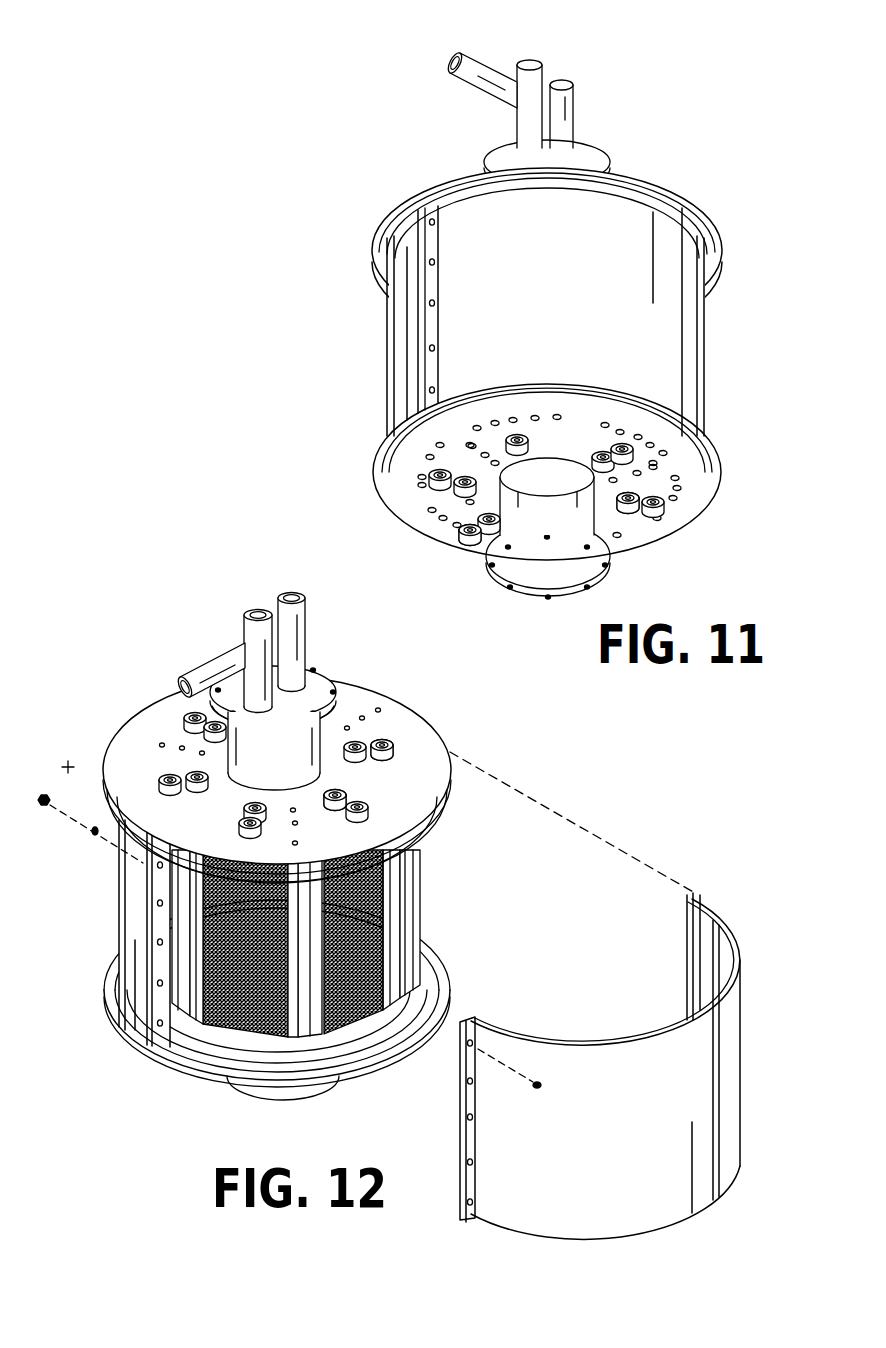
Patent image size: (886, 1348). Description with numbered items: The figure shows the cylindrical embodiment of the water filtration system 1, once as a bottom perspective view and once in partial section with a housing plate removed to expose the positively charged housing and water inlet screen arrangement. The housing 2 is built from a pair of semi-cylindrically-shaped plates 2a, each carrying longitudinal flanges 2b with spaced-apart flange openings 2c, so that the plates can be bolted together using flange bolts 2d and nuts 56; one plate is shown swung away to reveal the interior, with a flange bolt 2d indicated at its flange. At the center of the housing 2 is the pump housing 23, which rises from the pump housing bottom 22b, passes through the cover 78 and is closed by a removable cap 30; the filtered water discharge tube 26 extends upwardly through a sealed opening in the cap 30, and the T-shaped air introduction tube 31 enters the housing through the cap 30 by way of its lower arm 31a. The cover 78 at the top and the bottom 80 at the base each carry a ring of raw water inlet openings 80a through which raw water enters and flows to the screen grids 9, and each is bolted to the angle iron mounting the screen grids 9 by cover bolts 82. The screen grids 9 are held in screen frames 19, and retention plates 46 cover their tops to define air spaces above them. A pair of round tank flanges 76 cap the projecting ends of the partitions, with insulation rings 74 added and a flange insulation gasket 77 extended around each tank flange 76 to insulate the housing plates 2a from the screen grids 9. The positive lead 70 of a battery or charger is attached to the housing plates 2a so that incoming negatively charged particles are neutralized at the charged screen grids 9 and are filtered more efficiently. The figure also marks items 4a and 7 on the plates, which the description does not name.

In FIG. 11, the water filtration system 1 is at (535, 310).
In FIG. 12, the water filtration system 1 is at (399, 879).
In FIG. 12, the housing 2 is at (772, 1090).
In FIG. 11, the semi-cylindrically-shaped plates 2a is at (410, 328).
In FIG. 12, the semi-cylindrically-shaped plates 2a is at (135, 873).
In FIG. 11, the longitudinal flanges 2b is at (438, 302).
In FIG. 12, the longitudinal flanges 2b is at (160, 917).
In FIG. 12, the flange openings 2c is at (155, 982).
In FIG. 11, the flange bolts 2d is at (432, 328).
In FIG. 12, the flange bolts 2d is at (543, 1085).
In FIG. 11, the nozzle outlet 4a is at (467, 537).
In FIG. 12, the nozzle outlet 4a is at (388, 732).
In FIG. 11, the nozzles 7 is at (624, 445).
In FIG. 12, the nozzles 7 is at (190, 726).
In FIG. 12, the screen grids 9 is at (383, 878).
In FIG. 12, the screen frame 19 is at (316, 898).
In FIG. 11, the pump housing bottom 22b is at (568, 577).
In FIG. 12, the pump housing bottom 22b is at (306, 1095).
In FIG. 11, the pump housing 23 is at (548, 165).
In FIG. 12, the pump housing 23 is at (290, 778).
In FIG. 11, the filtered water discharge tube 26 is at (575, 90).
In FIG. 12, the filtered water discharge tube 26 is at (296, 645).
In FIG. 11, the removable cap 30 is at (590, 148).
In FIG. 12, the removable cap 30 is at (315, 690).
In FIG. 11, the air introduction tube 31 is at (472, 79).
In FIG. 12, the air introduction tube 31 is at (222, 650).
In FIG. 11, the lower arm 31a is at (531, 62).
In FIG. 12, the lower arm 31a is at (292, 596).
In FIG. 12, the retention plates 46 is at (280, 890).
In FIG. 12, the nuts 56 is at (42, 808).
In FIG. 12, the positive lead 70 is at (95, 828).
In FIG. 12, the insulation rings 74 is at (440, 978).
In FIG. 12, the tank flanges 76 is at (415, 925).
In FIG. 12, the flange insulation gasket 77 is at (432, 975).
In FIG. 11, the cover 78 is at (675, 188).
In FIG. 12, the cover 78 is at (364, 690).
In FIG. 12, the bottom 80 is at (420, 1060).
In FIG. 11, the raw water inlet openings 80a is at (557, 414).
In FIG. 11, the cover bolts 82 is at (470, 446).
In FIG. 12, the cover bolts 82 is at (380, 708).